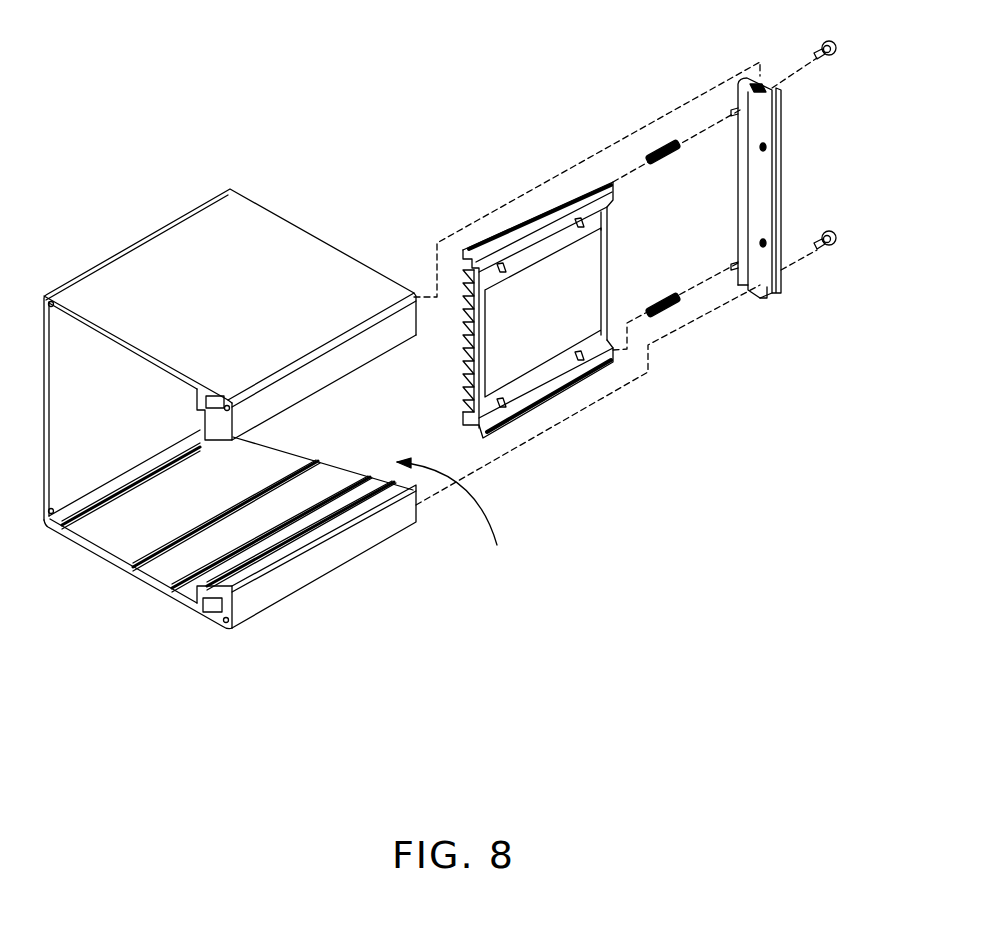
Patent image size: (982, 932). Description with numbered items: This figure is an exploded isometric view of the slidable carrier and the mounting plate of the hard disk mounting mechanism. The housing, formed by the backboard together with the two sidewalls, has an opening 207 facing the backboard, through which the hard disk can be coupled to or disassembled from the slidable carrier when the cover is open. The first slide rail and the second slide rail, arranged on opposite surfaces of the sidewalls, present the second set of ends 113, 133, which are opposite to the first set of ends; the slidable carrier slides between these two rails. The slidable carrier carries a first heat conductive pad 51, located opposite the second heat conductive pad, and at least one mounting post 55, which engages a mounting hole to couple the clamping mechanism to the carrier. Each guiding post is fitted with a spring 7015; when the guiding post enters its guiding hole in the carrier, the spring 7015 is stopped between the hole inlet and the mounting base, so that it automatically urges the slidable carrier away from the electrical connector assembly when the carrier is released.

The first heat conductive pad 51 is at (555, 277).
The mounting post 55 is at (591, 362).
The spring 7015 is at (667, 142).
The second end of first slide rail 113 is at (215, 398).
The second end of second slide rail 133 is at (213, 600).
The opening 207 is at (462, 524).